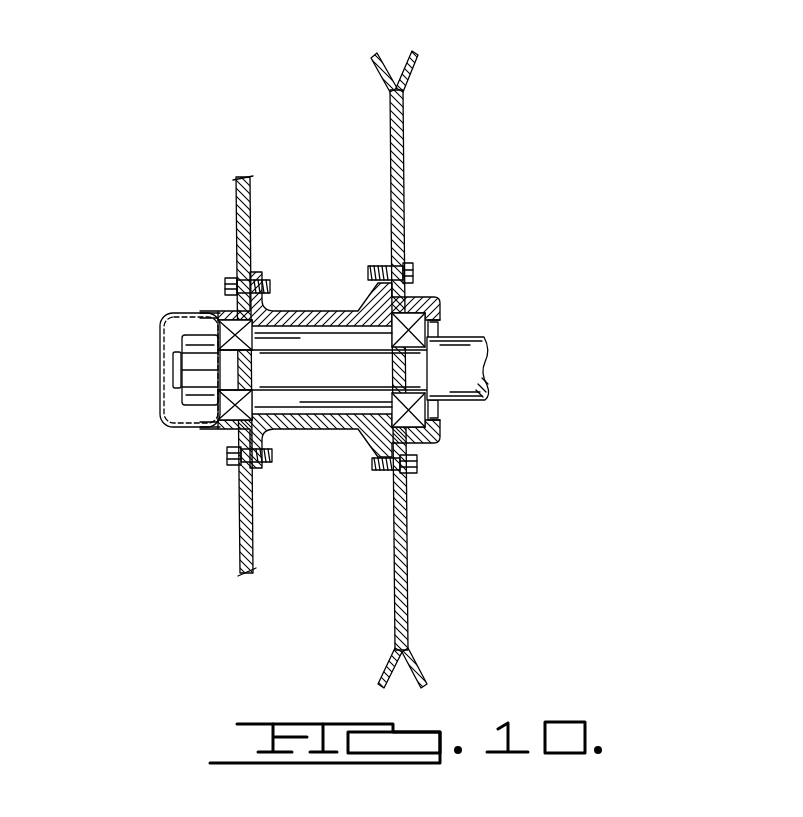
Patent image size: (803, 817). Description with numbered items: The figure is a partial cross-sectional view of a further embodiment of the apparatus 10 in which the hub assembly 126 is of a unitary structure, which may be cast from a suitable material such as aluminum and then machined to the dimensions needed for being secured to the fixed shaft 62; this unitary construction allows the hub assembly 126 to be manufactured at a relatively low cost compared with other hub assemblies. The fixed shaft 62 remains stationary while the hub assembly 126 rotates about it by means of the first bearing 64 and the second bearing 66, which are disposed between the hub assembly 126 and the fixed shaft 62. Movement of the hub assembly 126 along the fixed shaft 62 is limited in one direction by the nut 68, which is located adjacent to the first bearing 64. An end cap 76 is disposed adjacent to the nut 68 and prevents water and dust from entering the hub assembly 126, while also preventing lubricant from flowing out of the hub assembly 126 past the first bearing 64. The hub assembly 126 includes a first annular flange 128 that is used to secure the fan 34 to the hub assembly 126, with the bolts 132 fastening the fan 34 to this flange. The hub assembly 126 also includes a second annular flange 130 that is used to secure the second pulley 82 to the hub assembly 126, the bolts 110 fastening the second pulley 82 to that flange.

The apparatus 10 is at (565, 138).
The fan 34 is at (245, 185).
The fixed shaft 62 is at (470, 347).
The first bearing 64 is at (223, 433).
The second bearing 66 is at (420, 292).
The nut 68 is at (195, 345).
The end cap 76 is at (160, 380).
The second pulley 82 is at (403, 182).
The bolts 110 is at (417, 463).
The hub assembly 126 is at (318, 430).
The first annular flange 128 is at (262, 278).
The second annular flange 130 is at (385, 483).
The bolts 132 is at (225, 287).